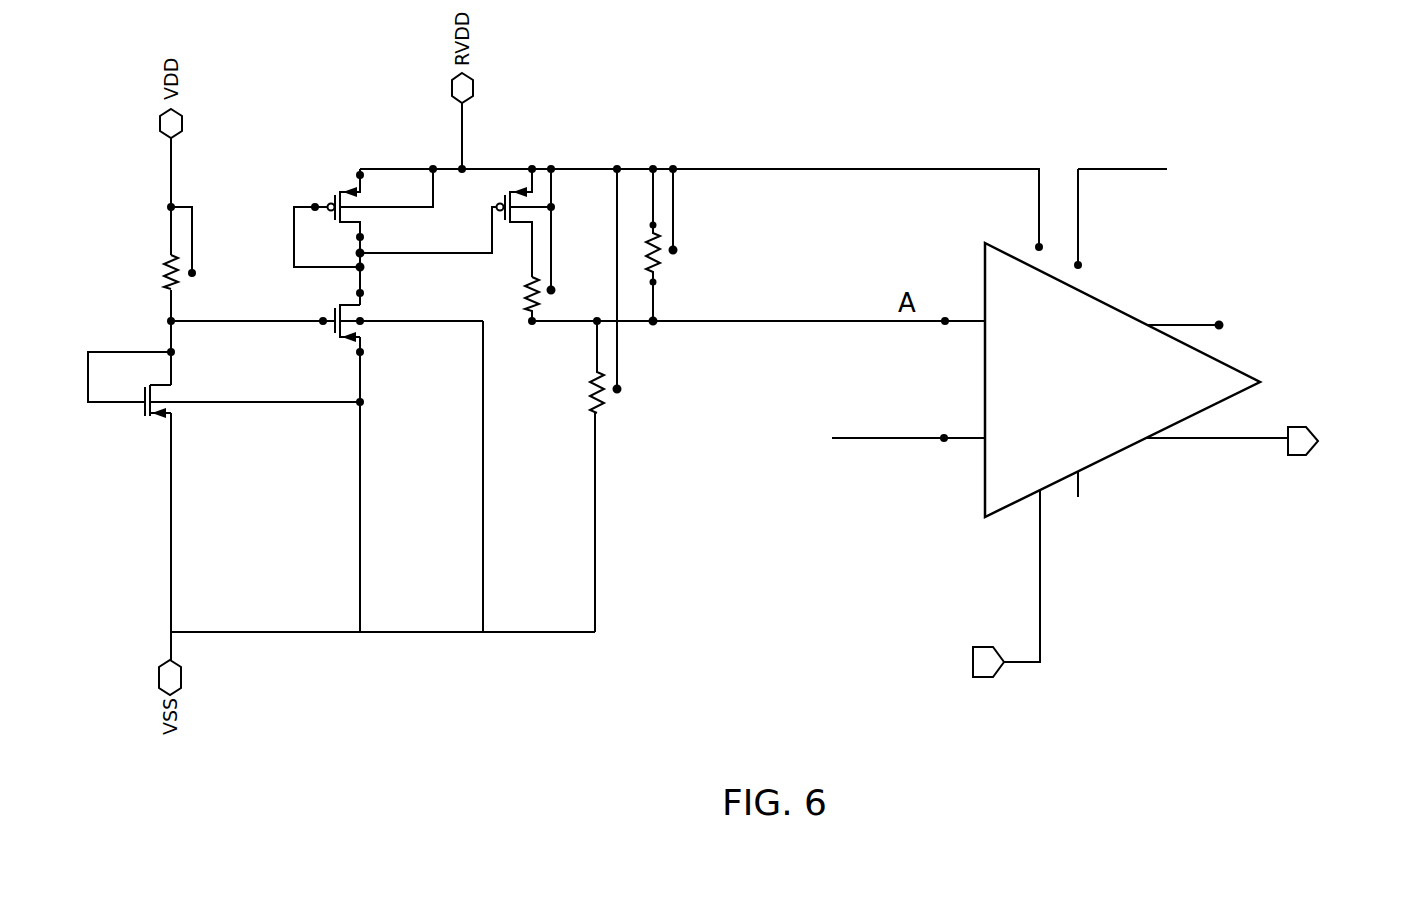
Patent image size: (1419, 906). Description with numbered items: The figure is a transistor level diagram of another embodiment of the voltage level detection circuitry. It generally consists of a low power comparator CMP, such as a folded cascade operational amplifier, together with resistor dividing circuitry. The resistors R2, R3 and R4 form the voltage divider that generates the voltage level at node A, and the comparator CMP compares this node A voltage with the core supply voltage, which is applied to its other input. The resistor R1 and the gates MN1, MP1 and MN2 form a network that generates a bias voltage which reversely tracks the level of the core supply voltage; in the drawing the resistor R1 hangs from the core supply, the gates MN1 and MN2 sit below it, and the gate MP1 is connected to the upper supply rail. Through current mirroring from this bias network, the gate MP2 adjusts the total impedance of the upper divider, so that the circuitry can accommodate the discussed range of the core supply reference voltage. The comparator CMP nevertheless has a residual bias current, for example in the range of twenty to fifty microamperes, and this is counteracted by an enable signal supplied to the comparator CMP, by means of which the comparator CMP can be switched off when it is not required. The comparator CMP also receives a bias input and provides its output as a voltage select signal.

The resistor R1 is at (152, 272).
The resistor R2 is at (514, 300).
The resistor R3 is at (682, 245).
The resistor R4 is at (576, 367).
The gate MN1 is at (235, 421).
The gate MN2 is at (390, 333).
The gate MP1 is at (383, 237).
The gate MP2 is at (497, 231).
The low power comparator CMP is at (1125, 407).